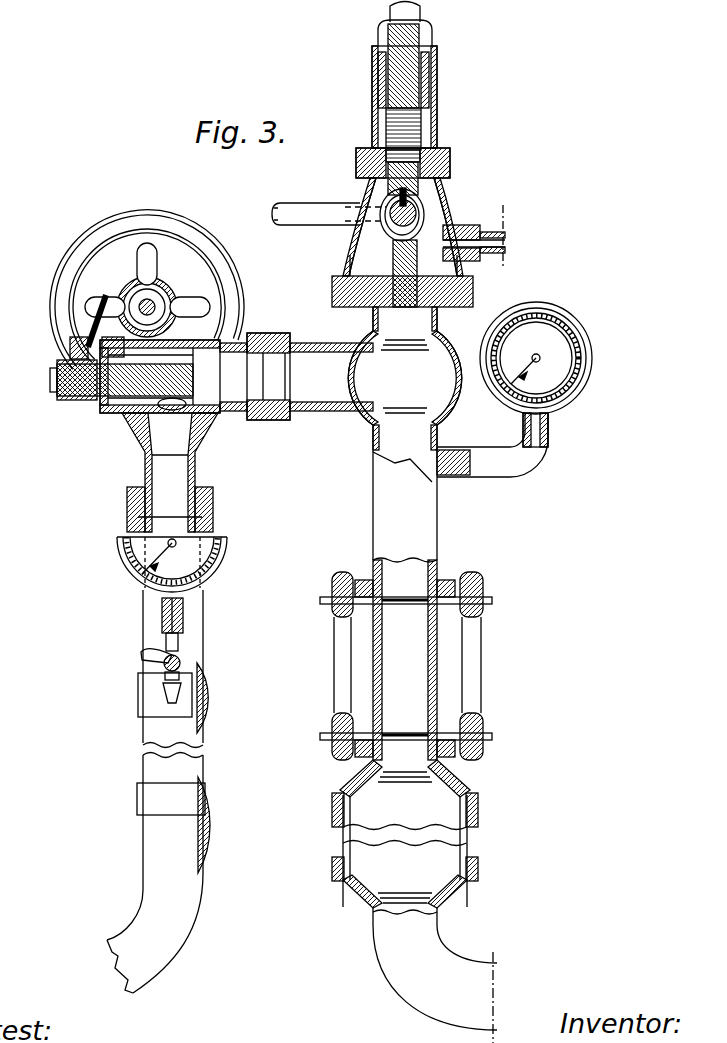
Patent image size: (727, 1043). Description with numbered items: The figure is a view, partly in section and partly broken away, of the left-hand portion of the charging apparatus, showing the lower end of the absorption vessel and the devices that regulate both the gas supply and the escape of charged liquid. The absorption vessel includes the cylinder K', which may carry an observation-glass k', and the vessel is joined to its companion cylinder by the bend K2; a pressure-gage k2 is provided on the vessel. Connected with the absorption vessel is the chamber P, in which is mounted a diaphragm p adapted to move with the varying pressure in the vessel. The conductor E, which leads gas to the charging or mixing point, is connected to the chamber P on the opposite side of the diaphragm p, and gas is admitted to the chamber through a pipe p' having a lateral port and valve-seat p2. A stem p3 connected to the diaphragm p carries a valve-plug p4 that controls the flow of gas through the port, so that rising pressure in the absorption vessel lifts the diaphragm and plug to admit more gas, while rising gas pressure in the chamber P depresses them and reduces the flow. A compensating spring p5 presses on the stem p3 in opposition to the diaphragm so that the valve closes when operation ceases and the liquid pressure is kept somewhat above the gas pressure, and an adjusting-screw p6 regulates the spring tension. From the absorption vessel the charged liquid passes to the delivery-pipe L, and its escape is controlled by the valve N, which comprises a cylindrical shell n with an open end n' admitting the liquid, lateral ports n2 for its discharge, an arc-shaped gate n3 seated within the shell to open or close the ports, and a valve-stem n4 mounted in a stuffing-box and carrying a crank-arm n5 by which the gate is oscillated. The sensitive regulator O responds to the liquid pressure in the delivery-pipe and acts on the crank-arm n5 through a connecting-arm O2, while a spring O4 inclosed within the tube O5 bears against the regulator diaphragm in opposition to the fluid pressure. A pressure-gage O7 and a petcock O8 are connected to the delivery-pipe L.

The adjusting-screw p6 is at (414, 78).
The compensating spring p5 is at (437, 124).
The valve-plug p4 is at (414, 188).
The lateral port and valve-seat p2 is at (410, 208).
The pipe p' is at (385, 200).
The chamber P is at (360, 238).
The diaphragm p is at (380, 264).
The stem p3 is at (403, 227).
The conductor E is at (503, 255).
The pressure-gage k2 is at (553, 387).
The observation-glass k' is at (414, 605).
The cylinder K' is at (422, 834).
The bend K2 is at (435, 975).
The diaphragm or sensitive regulator O is at (132, 276).
The spring O4 is at (128, 292).
The tube O5 is at (175, 290).
The connecting-arm O2 is at (90, 323).
The crank-arm n5 is at (75, 355).
The valve-stem n4 is at (90, 400).
The valve N is at (105, 408).
The cylindrical shell n is at (125, 409).
The lateral ports n2 is at (167, 420).
The arc-shaped gate n3 is at (195, 412).
The open end n' is at (255, 390).
The pressure-gage O7 is at (157, 573).
The delivery-pipe L is at (195, 624).
The petcock O8 is at (187, 662).